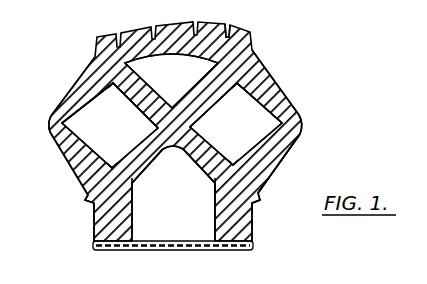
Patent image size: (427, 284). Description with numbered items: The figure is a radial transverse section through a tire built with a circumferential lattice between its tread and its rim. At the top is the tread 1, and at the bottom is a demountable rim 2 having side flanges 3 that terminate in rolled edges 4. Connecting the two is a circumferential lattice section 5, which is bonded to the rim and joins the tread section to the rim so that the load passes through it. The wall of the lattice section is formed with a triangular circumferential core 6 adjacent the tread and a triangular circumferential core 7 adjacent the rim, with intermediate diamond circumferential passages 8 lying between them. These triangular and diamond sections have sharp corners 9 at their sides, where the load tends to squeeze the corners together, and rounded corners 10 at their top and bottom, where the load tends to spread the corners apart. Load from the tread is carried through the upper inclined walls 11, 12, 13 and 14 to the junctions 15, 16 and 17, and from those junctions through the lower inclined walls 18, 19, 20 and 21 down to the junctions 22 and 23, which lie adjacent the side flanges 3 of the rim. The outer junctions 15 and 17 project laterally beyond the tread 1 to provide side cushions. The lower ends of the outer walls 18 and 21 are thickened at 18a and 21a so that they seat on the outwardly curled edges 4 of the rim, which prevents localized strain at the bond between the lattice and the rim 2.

The tread 1 is at (243, 31).
The demountable rim 2 is at (158, 249).
The side flanges 3 is at (251, 231).
The rolled edges 4 is at (262, 207).
The circumferential lattice section 5 is at (291, 152).
The triangular circumferential core 6 is at (228, 34).
The triangular circumferential core 7 is at (179, 191).
The diamond circumferential passages 8 is at (264, 105).
The sharp corners 9 is at (70, 123).
The rounded corners 10 is at (114, 84).
The inclined wall 11 is at (84, 97).
The inclined wall 12 is at (144, 105).
The inclined wall 13 is at (229, 100).
The inclined wall 14 is at (265, 102).
The junction 15 is at (57, 121).
The junction 16 is at (171, 107).
The junction 17 is at (301, 129).
The inclined wall 18 is at (74, 175).
The thickened lower end 18a is at (86, 203).
The inclined wall 19 is at (143, 157).
The inclined wall 20 is at (206, 167).
The inclined wall 21 is at (271, 161).
The thickened lower end 21a is at (259, 203).
The junction 22 is at (131, 194).
The junction 23 is at (215, 196).